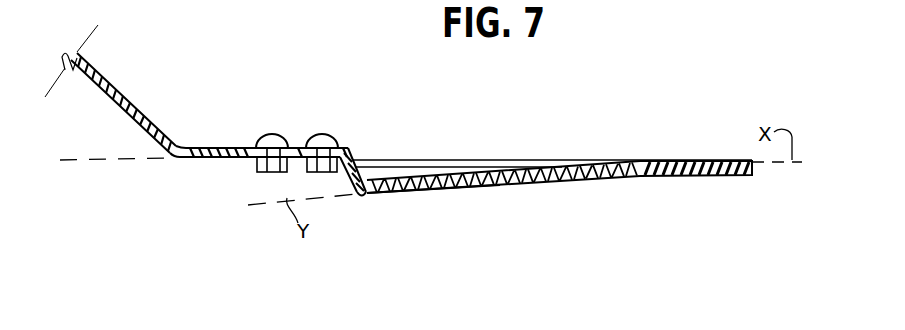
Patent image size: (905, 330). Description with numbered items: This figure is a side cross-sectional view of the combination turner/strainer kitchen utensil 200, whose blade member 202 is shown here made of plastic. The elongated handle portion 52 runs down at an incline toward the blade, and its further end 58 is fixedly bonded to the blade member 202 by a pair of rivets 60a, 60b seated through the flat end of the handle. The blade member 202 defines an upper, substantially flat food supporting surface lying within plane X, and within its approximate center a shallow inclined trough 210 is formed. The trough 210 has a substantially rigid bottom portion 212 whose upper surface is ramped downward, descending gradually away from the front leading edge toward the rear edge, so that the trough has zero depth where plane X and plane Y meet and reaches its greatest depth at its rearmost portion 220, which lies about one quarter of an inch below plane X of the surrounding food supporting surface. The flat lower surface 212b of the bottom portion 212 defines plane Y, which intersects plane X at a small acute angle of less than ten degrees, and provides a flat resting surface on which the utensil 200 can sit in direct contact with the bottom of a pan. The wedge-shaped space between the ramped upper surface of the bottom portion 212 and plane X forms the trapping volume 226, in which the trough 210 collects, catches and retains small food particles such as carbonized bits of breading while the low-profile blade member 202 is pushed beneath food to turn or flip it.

The handle portion 52 is at (124, 93).
The further end 58 is at (163, 133).
The rivet 60a is at (273, 135).
The rivet 60b is at (325, 135).
The combination turner/strainer kitchen utensil 200 is at (552, 163).
The blade member 202 is at (677, 177).
The trough 210 is at (470, 150).
The bottom portion 212 is at (390, 180).
The lower surface 212b is at (435, 190).
The rearmost portion 220 is at (353, 195).
The trapping volume 226 is at (360, 149).